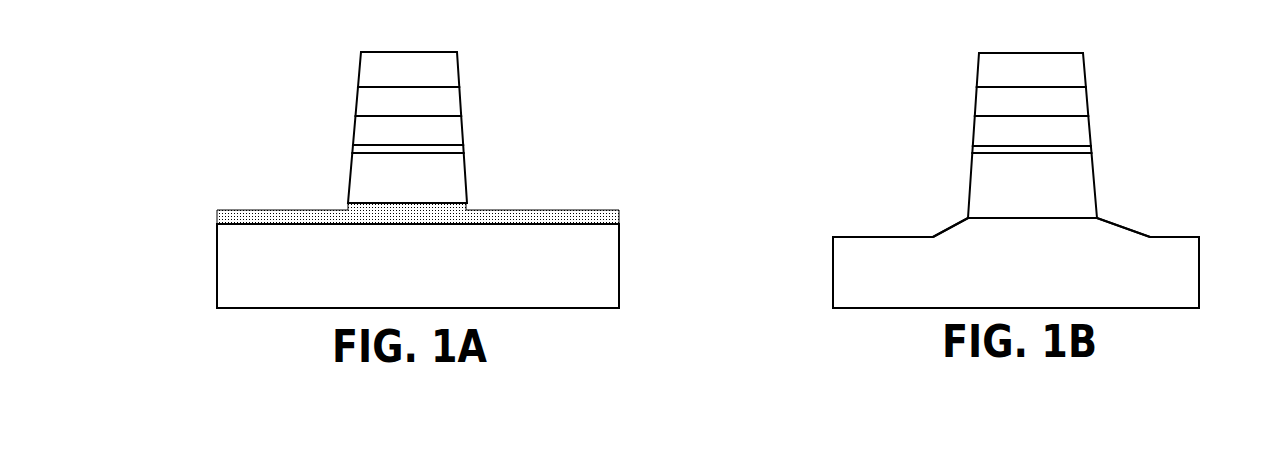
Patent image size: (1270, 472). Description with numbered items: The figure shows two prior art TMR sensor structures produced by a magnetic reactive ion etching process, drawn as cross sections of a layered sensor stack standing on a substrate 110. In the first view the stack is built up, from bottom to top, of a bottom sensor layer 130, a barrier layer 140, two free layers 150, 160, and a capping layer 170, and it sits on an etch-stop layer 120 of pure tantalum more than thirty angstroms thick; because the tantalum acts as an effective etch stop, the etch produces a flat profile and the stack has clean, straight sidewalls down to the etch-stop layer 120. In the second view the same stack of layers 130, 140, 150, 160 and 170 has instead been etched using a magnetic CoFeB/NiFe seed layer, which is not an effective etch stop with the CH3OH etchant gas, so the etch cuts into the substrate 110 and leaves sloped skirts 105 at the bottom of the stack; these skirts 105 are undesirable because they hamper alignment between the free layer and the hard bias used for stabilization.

In FIG. 1B, the skirts 105 is at (1117, 228).
In FIG. 1A, the substrate 110 is at (803, 268).
In FIG. 1B, the substrate 110 is at (1016, 263).
In FIG. 1A, the etch-stop layer 120 is at (638, 213).
In FIG. 1A, the bottom sensor layer 130 is at (482, 184).
In FIG. 1B, the bottom sensor layer 130 is at (950, 184).
In FIG. 1A, the barrier layer 140 is at (482, 153).
In FIG. 1B, the barrier layer 140 is at (950, 153).
In FIG. 1A, the free layer 150 is at (482, 124).
In FIG. 1B, the free layer 150 is at (950, 124).
In FIG. 1A, the free layer 160 is at (482, 94).
In FIG. 1B, the free layer 160 is at (950, 94).
In FIG. 1A, the capping layer 170 is at (482, 64).
In FIG. 1B, the capping layer 170 is at (950, 64).